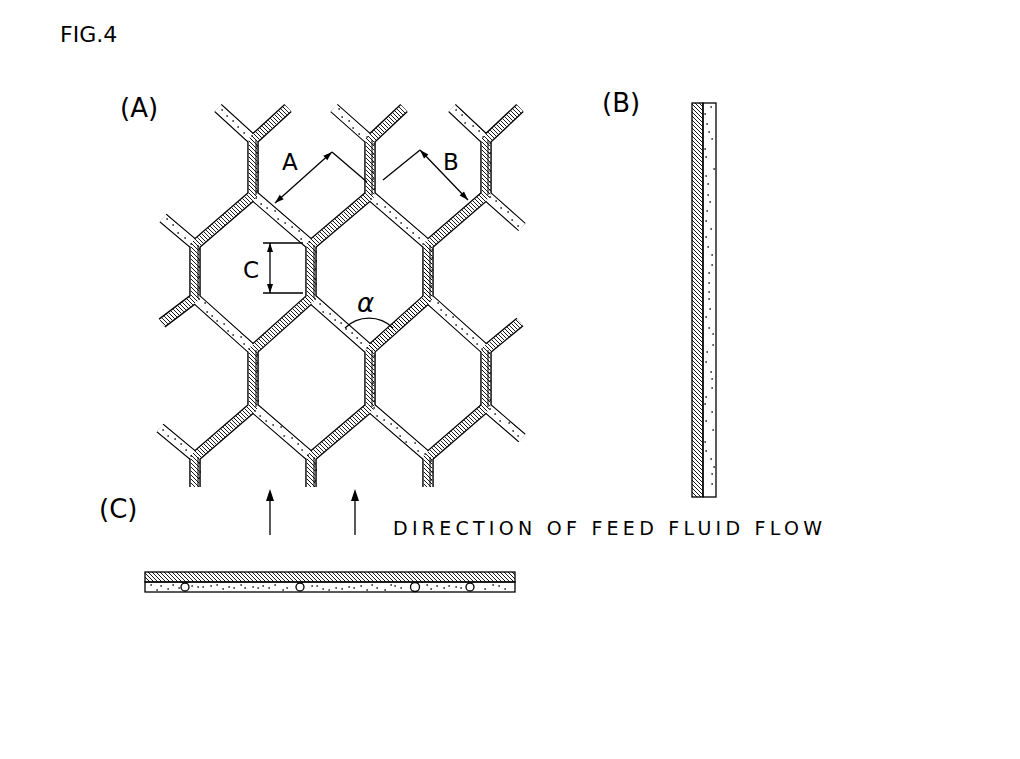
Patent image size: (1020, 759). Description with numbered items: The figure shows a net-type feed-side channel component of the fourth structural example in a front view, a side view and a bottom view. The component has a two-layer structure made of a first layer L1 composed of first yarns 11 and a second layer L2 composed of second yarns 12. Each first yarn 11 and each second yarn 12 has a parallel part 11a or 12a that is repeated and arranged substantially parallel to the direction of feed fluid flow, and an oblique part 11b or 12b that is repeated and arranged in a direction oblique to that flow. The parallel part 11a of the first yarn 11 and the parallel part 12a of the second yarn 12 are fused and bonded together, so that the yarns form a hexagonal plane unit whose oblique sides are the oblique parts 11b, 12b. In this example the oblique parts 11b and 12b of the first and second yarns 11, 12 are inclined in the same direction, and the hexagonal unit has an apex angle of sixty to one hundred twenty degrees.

The first yarn 11 is at (489, 112).
The parallel part of the first yarn 11a is at (436, 278).
The oblique part of the first yarn 11b is at (467, 113).
The second yarn 12 is at (505, 147).
The parallel part of the second yarn 12a is at (424, 272).
The oblique part of the second yarn 12b is at (411, 324).
The first layer L1 is at (717, 304).
The second layer L2 is at (690, 322).